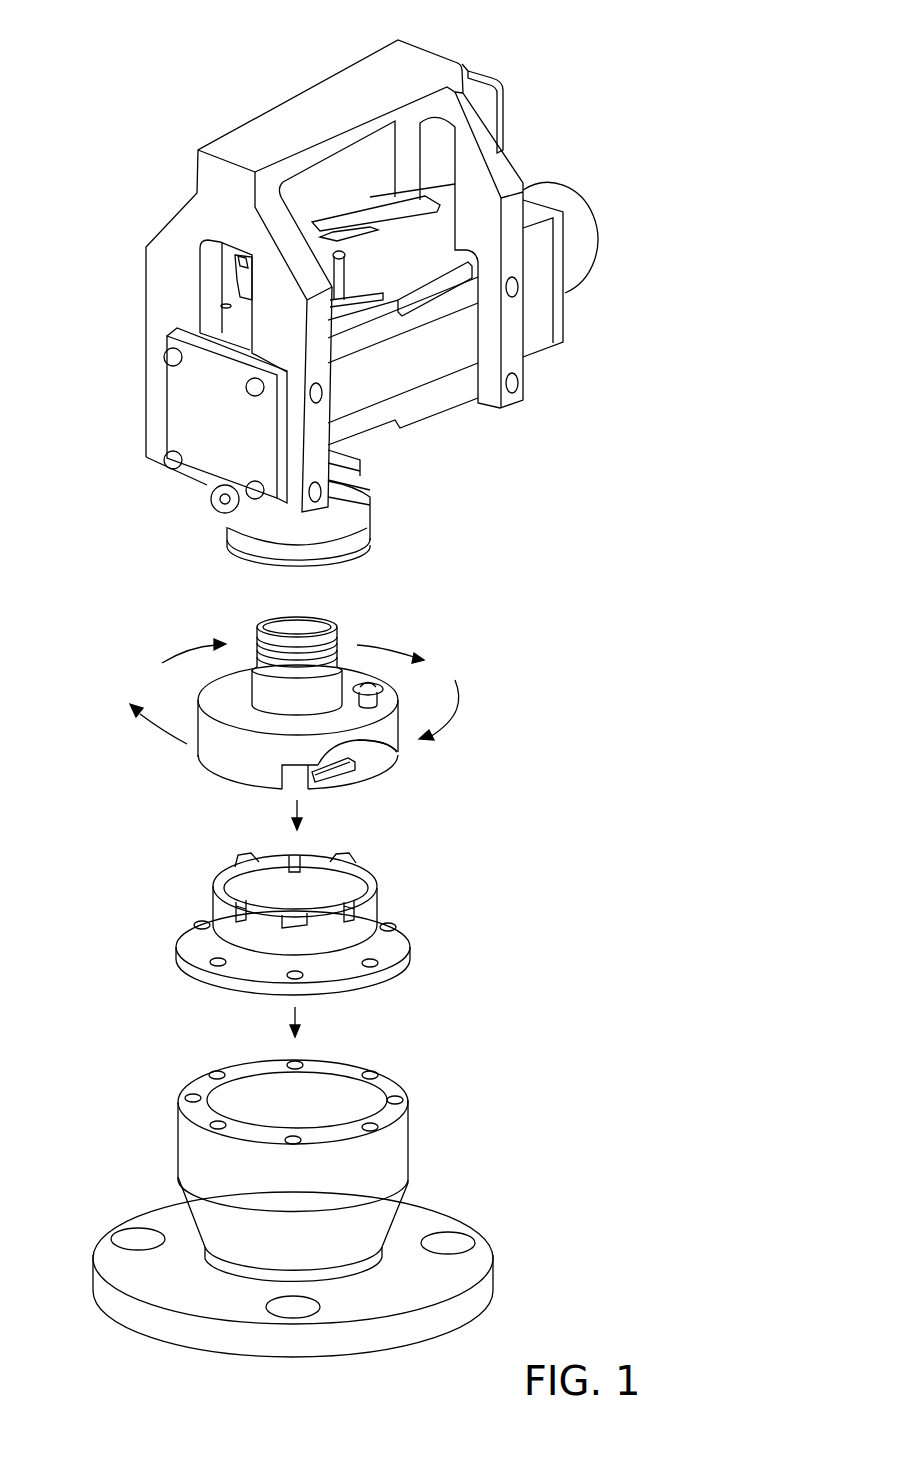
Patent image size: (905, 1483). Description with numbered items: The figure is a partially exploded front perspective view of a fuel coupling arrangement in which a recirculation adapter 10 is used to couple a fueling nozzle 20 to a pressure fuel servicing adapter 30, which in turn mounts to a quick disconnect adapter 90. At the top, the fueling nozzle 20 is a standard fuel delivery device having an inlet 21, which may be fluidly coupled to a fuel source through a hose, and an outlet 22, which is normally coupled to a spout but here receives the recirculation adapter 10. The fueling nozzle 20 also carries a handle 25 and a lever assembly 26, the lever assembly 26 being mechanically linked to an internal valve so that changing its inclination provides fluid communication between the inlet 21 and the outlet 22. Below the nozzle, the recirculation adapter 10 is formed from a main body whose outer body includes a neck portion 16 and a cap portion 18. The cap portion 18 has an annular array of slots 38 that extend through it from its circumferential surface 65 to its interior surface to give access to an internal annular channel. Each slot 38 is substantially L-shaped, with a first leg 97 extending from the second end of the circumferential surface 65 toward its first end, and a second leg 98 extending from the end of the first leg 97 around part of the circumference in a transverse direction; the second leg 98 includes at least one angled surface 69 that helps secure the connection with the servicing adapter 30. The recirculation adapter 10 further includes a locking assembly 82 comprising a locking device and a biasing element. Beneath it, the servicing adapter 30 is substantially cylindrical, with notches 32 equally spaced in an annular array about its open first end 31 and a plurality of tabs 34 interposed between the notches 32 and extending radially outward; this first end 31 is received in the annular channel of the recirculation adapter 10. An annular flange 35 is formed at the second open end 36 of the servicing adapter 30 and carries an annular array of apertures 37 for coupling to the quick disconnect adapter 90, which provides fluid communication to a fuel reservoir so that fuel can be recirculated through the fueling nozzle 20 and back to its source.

The recirculation adapter 10 is at (504, 702).
The neck portion 16 is at (248, 676).
The cap portion 18 is at (197, 702).
The fueling nozzle 20 is at (98, 232).
The inlet 21 is at (597, 220).
The outlet 22 is at (352, 566).
The handle 25 is at (283, 120).
The lever assembly 26 is at (370, 202).
The servicing adapter 30 is at (477, 915).
The open first end 31 is at (375, 882).
The notches 32 is at (294, 856).
The tabs 34 is at (348, 857).
The annular flange 35 is at (190, 937).
The second open end 36 is at (373, 983).
The apertures 37 is at (288, 975).
The slots 38 is at (280, 762).
The circumferential surface 65 is at (212, 743).
The angled surface 69 is at (390, 750).
The locking assembly 82 is at (387, 688).
The quick disconnect adapter 90 is at (475, 1145).
The first leg 97 is at (283, 768).
The second leg 98 is at (360, 767).